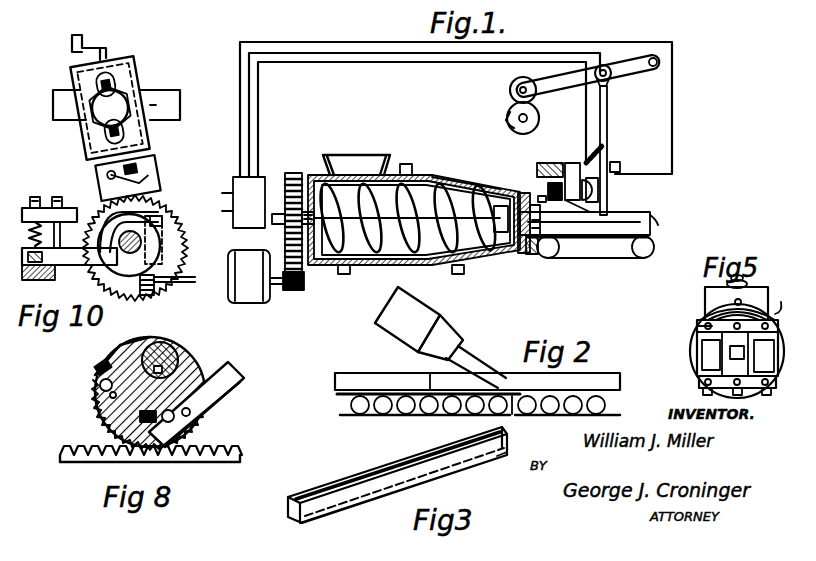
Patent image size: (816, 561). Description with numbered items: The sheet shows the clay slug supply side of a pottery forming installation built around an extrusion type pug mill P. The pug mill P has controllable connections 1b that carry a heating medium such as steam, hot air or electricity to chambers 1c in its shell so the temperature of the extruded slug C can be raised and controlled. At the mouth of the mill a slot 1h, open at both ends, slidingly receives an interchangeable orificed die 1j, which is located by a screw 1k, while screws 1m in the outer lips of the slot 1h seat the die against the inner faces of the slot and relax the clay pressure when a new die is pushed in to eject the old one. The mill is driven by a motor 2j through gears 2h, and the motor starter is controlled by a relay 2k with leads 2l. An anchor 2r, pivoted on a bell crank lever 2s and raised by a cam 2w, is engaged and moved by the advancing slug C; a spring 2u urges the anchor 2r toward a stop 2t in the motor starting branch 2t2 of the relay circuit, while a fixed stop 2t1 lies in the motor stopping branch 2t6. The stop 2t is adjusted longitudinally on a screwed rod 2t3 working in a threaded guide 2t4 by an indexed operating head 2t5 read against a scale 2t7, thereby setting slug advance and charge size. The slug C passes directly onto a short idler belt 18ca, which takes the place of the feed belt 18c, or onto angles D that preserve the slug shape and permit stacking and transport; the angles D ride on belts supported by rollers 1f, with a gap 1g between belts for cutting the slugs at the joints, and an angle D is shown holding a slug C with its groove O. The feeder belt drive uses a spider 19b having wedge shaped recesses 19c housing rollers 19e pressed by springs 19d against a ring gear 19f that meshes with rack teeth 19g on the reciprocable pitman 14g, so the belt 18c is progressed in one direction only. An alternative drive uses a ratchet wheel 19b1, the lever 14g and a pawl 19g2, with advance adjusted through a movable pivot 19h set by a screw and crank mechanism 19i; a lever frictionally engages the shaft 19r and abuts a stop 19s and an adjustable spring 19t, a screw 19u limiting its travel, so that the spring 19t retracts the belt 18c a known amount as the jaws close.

In FIG. 1, the controllable connections 1b is at (412, 168).
In FIG. 5, the controllable connections 1b is at (741, 300).
In FIG. 1, the chambers 1c is at (440, 270).
In FIG. 2, the chambers 1c is at (445, 416).
In FIG. 2, the rollers 1f is at (552, 416).
In FIG. 2, the gap 1g is at (512, 416).
In FIG. 1, the slot 1h is at (536, 256).
In FIG. 5, the orificed die 1j is at (698, 346).
In FIG. 1, the screw 1k is at (520, 262).
In FIG. 5, the screw 1k is at (702, 358).
In FIG. 1, the screws 1m is at (546, 204).
In FIG. 5, the screws 1m is at (700, 322).
In FIG. 1, the gears 2h is at (300, 292).
In FIG. 1, the motor 2j is at (256, 276).
In FIG. 1, the relay 2k is at (249, 202).
In FIG. 1, the wires 2l is at (221, 209).
In FIG. 1, the anchor 2r is at (607, 107).
In FIG. 1, the bell crank lever 2s is at (588, 76).
In FIG. 1, the stop 2t is at (598, 186).
In FIG. 1, the stop 2t1 is at (620, 166).
In FIG. 1, the motor starting branch 2t2 is at (584, 132).
In FIG. 1, the screwed rod 2t3 is at (570, 202).
In FIG. 1, the threaded guide 2t4 is at (566, 160).
In FIG. 1, the indexed operating head 2t5 is at (545, 185).
In FIG. 1, the motor stopping branch 2t6 is at (674, 118).
In FIG. 1, the scale 2t7 is at (535, 160).
In FIG. 1, the spring 2u is at (600, 147).
In FIG. 1, the cam 2w is at (516, 130).
In FIG. 10, the pitman 14g is at (180, 110).
In FIG. 8, the pitman 14g is at (241, 462).
In FIG. 10, the feed belt 18c is at (184, 282).
In FIG. 1, the idler belt 18ca is at (596, 260).
In FIG. 8, the spider 19b is at (174, 360).
In FIG. 10, the ratchet wheel 19b1 is at (184, 222).
In FIG. 8, the wedge shaped recesses 19c is at (94, 401).
In FIG. 8, the springs 19d is at (96, 352).
In FIG. 8, the rollers 19e is at (96, 386).
In FIG. 8, the ring gear 19f is at (228, 364).
In FIG. 10, the rack teeth 19g is at (112, 282).
In FIG. 8, the rack teeth 19g is at (234, 450).
In FIG. 10, the pawl 19g2 is at (155, 172).
In FIG. 10, the movable pivot 19h is at (163, 103).
In FIG. 10, the screw and crank mechanism 19i is at (100, 48).
In FIG. 10, the shaft 19r is at (131, 240).
In FIG. 10, the stop 19s is at (30, 280).
In FIG. 10, the adjustable spring 19t is at (69, 243).
In FIG. 10, the screw 19u is at (72, 206).
In FIG. 1, the slug C is at (656, 220).
In FIG. 2, the angle D is at (378, 362).
In FIG. 3, the angle D is at (492, 462).
In FIG. 3, the groove O is at (389, 460).
In FIG. 1, the pug mill P is at (449, 174).
In FIG. 2, the pug mill P is at (458, 322).
In FIG. 5, the pug mill P is at (788, 296).